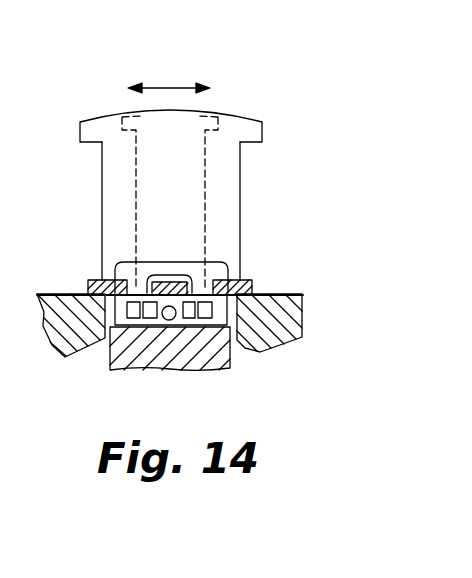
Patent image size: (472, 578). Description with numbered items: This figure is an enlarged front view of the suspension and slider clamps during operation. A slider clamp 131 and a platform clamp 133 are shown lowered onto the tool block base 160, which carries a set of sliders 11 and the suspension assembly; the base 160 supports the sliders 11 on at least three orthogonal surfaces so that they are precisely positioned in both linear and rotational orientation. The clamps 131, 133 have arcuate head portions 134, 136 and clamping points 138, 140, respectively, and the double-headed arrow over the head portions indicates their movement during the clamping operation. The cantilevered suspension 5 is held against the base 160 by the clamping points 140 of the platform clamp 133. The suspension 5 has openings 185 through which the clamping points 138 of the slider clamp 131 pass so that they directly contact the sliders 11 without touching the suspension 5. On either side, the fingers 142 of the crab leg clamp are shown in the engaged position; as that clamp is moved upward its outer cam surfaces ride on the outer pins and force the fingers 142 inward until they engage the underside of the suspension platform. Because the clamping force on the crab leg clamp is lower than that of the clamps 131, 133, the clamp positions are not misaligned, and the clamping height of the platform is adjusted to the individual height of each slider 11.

The arcuate head portion 134 is at (210, 113).
The arcuate head portion 136 is at (246, 123).
The slider clamp 131 is at (206, 158).
The platform clamp 133 is at (240, 190).
The openings 185 is at (138, 287).
The clamping points 138 is at (202, 287).
The clamping points 140 is at (235, 280).
The cantilevered suspension 5 is at (97, 282).
The finger 142 is at (66, 343).
The tool block base 160 is at (214, 348).
The sliders 11 is at (190, 313).